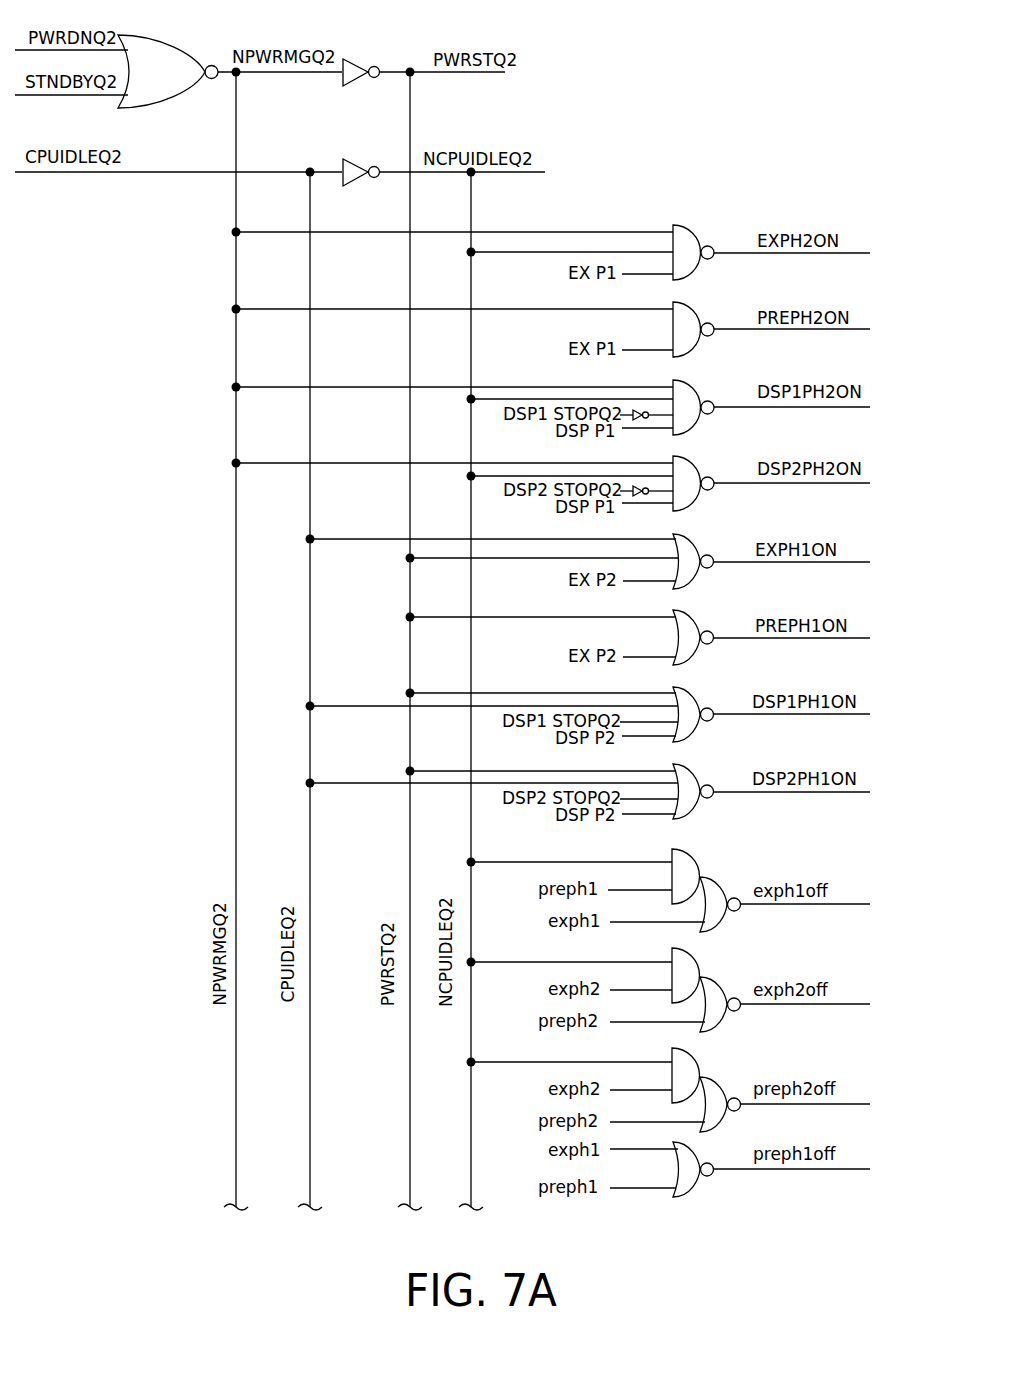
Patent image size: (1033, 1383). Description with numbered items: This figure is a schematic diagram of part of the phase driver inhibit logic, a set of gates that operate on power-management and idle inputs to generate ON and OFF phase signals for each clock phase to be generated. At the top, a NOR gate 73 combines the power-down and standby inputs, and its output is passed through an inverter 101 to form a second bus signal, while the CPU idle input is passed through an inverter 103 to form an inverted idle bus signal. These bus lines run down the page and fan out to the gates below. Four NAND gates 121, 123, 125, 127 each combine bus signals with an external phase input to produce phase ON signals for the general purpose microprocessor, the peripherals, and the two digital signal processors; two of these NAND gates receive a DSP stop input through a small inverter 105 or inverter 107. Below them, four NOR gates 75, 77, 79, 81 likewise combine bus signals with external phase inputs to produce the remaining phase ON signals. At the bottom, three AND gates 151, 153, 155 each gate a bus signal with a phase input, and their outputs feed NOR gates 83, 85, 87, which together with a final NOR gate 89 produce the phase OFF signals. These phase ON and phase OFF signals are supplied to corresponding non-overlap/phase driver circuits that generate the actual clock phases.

The NOR gate 73 is at (172, 42).
The inverter 101 is at (357, 63).
The inverter 103 is at (357, 163).
The inverter 105 is at (637, 410).
The inverter 107 is at (631, 486).
The NAND gate 121 is at (553, 256).
The NAND gate 123 is at (553, 334).
The NAND gate 125 is at (553, 412).
The NAND gate 127 is at (553, 488).
The NOR gate 75 is at (590, 565).
The NOR gate 77 is at (640, 641).
The NOR gate 79 is at (590, 718).
The NOR gate 81 is at (590, 796).
The AND gate 151 is at (716, 861).
The AND gate 153 is at (716, 960).
The AND gate 155 is at (716, 1060).
The NOR gate 83 is at (740, 911).
The NOR gate 85 is at (740, 1011).
The NOR gate 87 is at (740, 1111).
The NOR gate 89 is at (740, 1175).